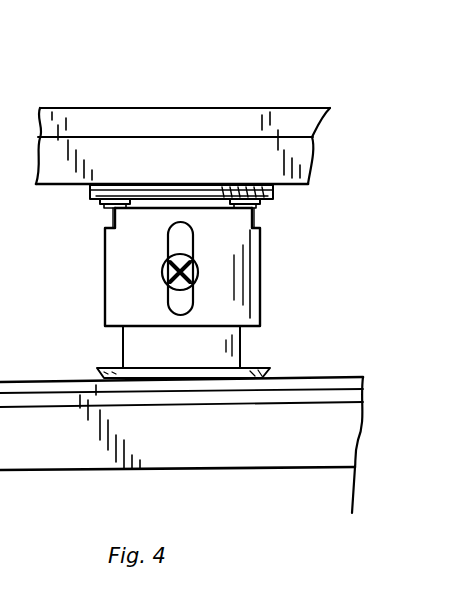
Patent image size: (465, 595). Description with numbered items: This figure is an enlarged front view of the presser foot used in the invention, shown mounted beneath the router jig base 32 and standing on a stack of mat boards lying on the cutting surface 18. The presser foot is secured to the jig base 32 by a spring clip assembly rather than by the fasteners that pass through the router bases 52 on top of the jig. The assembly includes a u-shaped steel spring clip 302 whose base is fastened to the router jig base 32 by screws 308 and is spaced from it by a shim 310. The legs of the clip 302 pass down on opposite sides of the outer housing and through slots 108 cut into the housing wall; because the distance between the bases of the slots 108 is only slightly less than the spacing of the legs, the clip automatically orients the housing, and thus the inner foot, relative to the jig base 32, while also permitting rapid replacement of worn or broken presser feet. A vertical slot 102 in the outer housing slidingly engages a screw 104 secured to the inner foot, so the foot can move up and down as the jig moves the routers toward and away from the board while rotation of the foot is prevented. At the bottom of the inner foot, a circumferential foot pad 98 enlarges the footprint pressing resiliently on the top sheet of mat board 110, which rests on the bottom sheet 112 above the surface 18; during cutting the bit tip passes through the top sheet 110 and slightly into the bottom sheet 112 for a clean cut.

The router base 52 is at (293, 118).
The router jig base 32 is at (298, 163).
The u-shaped steel spring clip 302 is at (180, 190).
The shim 310 is at (130, 190).
The screws 308 is at (111, 192).
The foot pad 98 is at (256, 368).
The slots 108 is at (110, 213).
The vertical slot 102 is at (187, 237).
The screw 104 is at (200, 270).
The base 18 is at (195, 448).
The top sheet of mat board 110 is at (58, 384).
The bottom sheet of mat board 112 is at (330, 393).